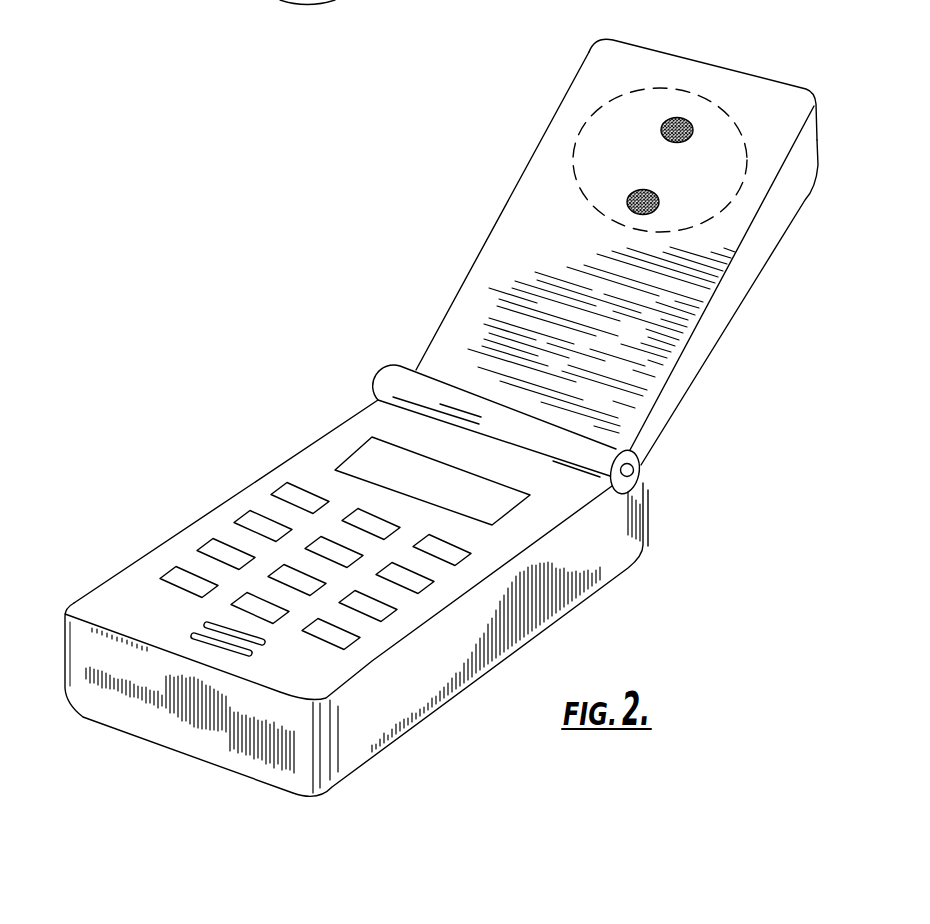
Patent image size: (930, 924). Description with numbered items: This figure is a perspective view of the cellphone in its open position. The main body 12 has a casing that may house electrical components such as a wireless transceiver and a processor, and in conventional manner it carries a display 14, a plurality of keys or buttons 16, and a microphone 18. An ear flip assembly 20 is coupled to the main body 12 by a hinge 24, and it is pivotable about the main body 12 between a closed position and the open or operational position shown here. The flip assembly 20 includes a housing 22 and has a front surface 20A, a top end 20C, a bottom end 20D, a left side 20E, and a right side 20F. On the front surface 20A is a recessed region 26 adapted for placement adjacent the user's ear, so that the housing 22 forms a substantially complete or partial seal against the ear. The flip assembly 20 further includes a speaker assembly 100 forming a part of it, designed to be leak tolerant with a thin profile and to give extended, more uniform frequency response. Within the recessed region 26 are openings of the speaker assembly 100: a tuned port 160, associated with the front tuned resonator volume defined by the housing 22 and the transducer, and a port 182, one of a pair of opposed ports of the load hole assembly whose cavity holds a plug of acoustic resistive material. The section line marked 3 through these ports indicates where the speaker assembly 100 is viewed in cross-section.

The main body 12 is at (163, 557).
The display 14 is at (365, 457).
The keys or buttons 16 is at (267, 527).
The microphone 18 is at (197, 637).
The ear flip assembly 20 is at (603, 263).
The front surface 20A is at (512, 238).
The top end 20C is at (712, 63).
The bottom end 20D is at (453, 387).
The left side 20E is at (467, 272).
The right side 20F is at (762, 242).
The housing 22 is at (700, 358).
The hinge 24 is at (628, 472).
The recessed region 26 is at (627, 137).
The speaker assembly 100 is at (612, 162).
The tuned port 160 is at (682, 147).
The port 182 is at (657, 214).
The section line of FIG. 3 is at (687, 117).